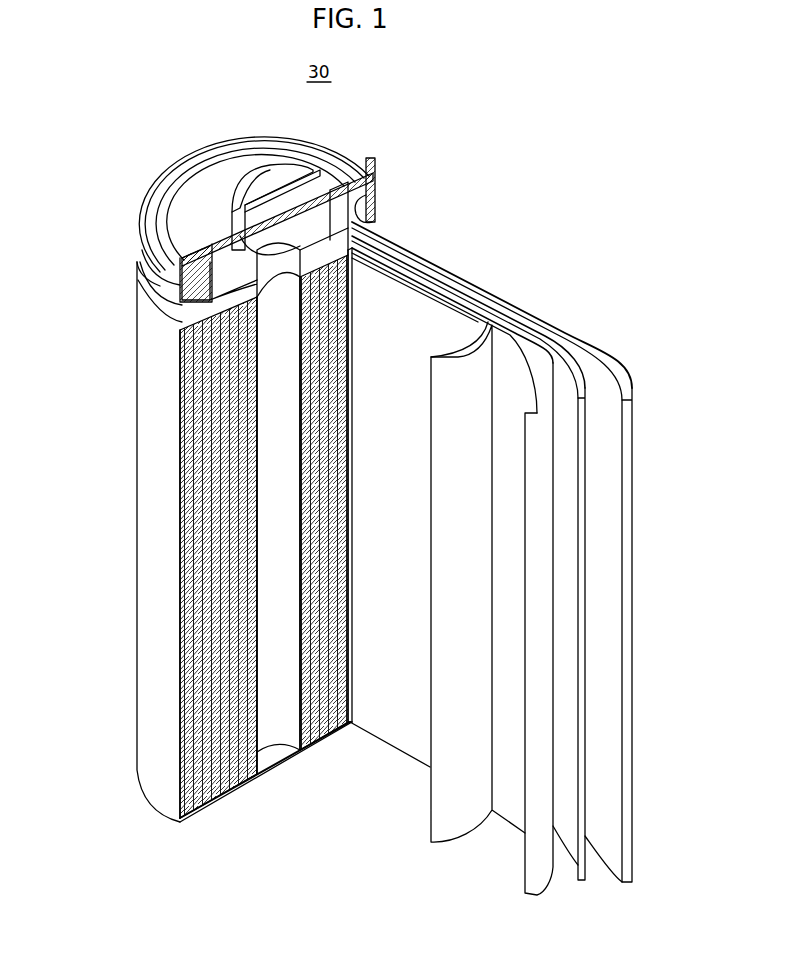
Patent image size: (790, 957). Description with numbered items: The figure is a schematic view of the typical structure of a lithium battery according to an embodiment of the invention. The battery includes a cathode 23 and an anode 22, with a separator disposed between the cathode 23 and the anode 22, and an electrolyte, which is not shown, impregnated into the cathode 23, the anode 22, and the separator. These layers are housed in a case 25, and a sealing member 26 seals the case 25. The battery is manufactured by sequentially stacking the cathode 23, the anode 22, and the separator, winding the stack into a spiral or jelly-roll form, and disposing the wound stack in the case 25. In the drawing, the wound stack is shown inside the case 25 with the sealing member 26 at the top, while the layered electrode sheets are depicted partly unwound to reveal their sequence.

The anode 22 is at (610, 368).
The cathode 23 is at (544, 365).
The case 25 is at (140, 521).
The sealing member 26 is at (250, 178).